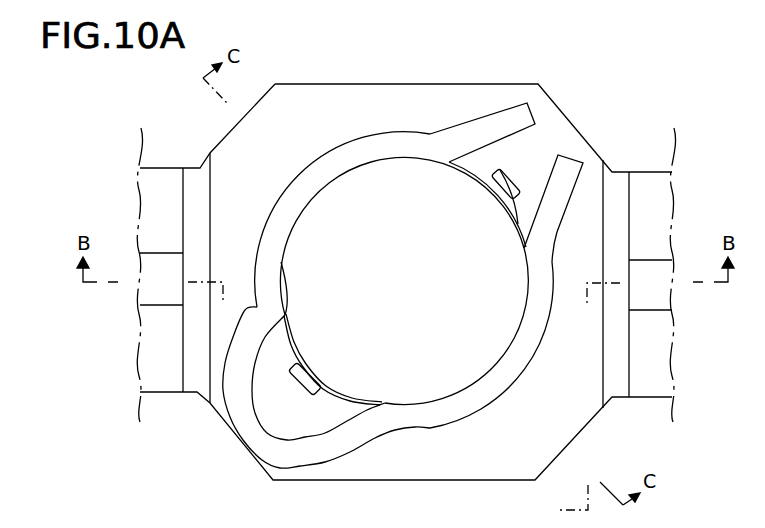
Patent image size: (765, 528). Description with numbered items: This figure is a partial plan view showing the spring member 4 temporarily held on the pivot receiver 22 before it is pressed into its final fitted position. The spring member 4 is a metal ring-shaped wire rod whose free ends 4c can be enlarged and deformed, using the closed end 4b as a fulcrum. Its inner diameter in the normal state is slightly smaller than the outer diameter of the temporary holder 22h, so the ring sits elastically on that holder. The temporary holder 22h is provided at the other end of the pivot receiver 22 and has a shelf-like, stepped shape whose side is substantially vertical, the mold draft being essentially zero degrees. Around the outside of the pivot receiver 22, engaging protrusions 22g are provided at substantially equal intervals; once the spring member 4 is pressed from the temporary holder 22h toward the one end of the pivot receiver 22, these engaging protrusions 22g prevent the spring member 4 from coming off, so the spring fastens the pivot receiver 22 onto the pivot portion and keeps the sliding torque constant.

The spring member 4 is at (459, 281).
The closed end 4b is at (302, 455).
The free ends 4c is at (510, 118).
The pivot receiver 22 is at (582, 96).
The engaging protrusions 22g is at (512, 172).
The temporary holder 22h is at (518, 222).